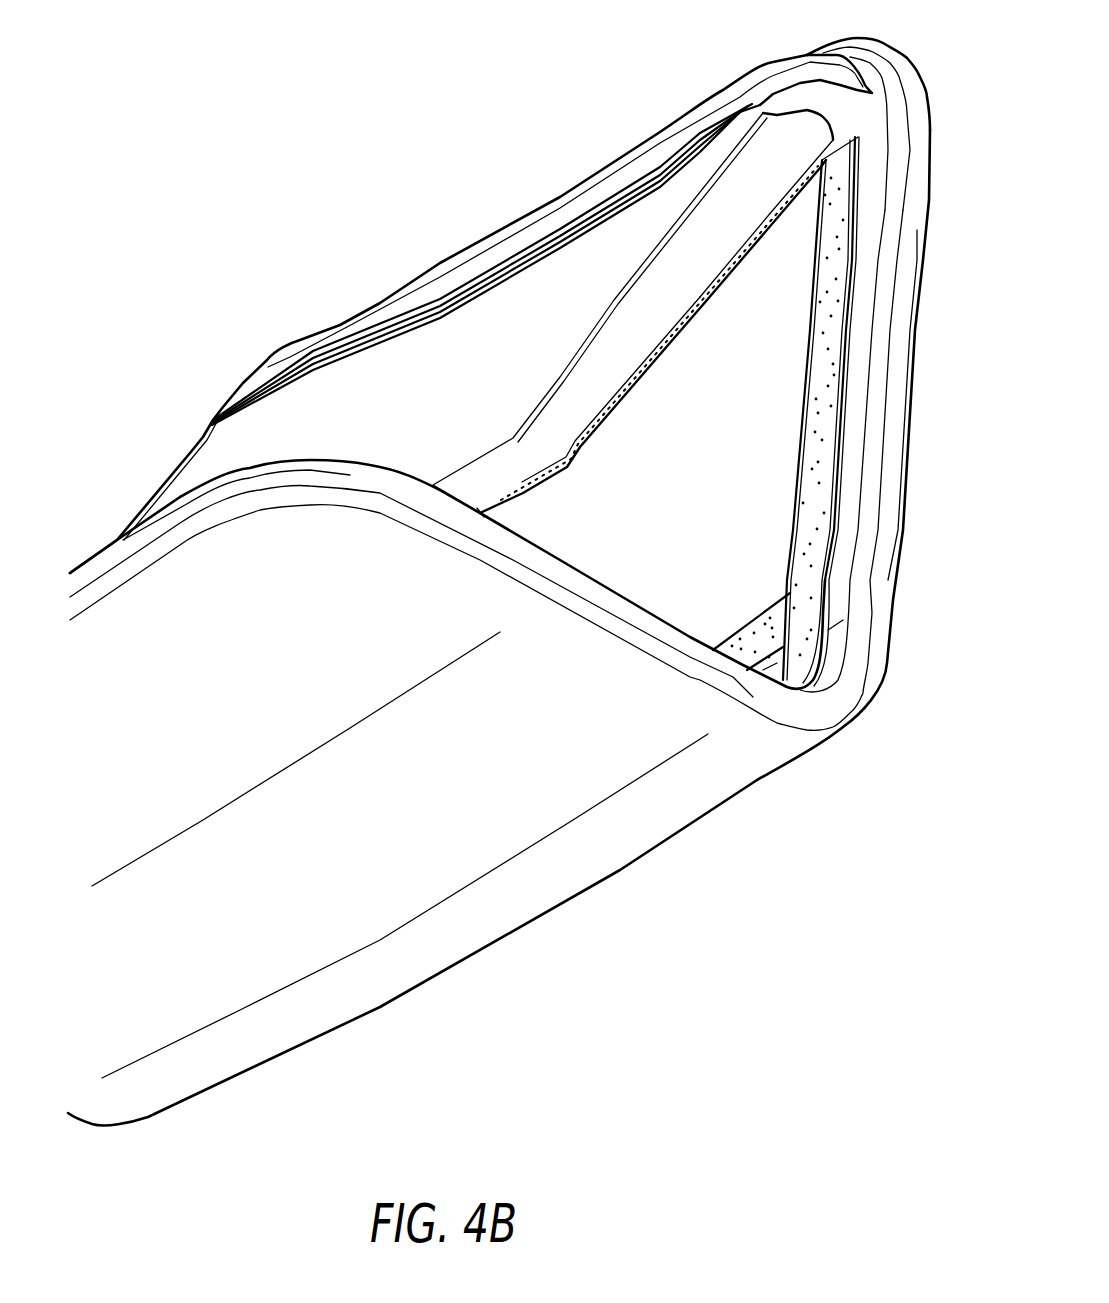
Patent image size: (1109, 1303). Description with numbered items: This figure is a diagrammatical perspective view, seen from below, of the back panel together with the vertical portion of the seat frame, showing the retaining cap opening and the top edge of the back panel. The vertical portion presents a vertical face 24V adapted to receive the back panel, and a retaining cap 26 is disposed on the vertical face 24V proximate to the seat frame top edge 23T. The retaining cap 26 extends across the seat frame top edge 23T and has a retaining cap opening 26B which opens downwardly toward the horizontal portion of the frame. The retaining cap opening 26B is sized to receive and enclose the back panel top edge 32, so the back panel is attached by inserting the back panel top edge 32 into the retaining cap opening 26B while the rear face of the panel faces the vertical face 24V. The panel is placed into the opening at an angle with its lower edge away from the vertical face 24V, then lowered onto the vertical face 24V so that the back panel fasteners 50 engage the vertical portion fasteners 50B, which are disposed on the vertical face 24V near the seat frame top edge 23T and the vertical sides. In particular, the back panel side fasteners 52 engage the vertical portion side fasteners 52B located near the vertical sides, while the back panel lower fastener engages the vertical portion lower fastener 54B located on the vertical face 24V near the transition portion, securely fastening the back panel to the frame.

The retaining cap 26 is at (740, 78).
The seat frame top edge 23T is at (890, 72).
The retaining cap opening 26B is at (822, 112).
The back panel top edge 32 is at (833, 118).
The vertical portion fasteners 50B is at (860, 212).
The vertical portion side fasteners 52B is at (830, 360).
The vertical face 24V is at (780, 522).
The vertical portion lower fastener 54B is at (772, 635).
The back panel fasteners 50 is at (550, 485).
The back panel side fasteners 52 is at (643, 380).